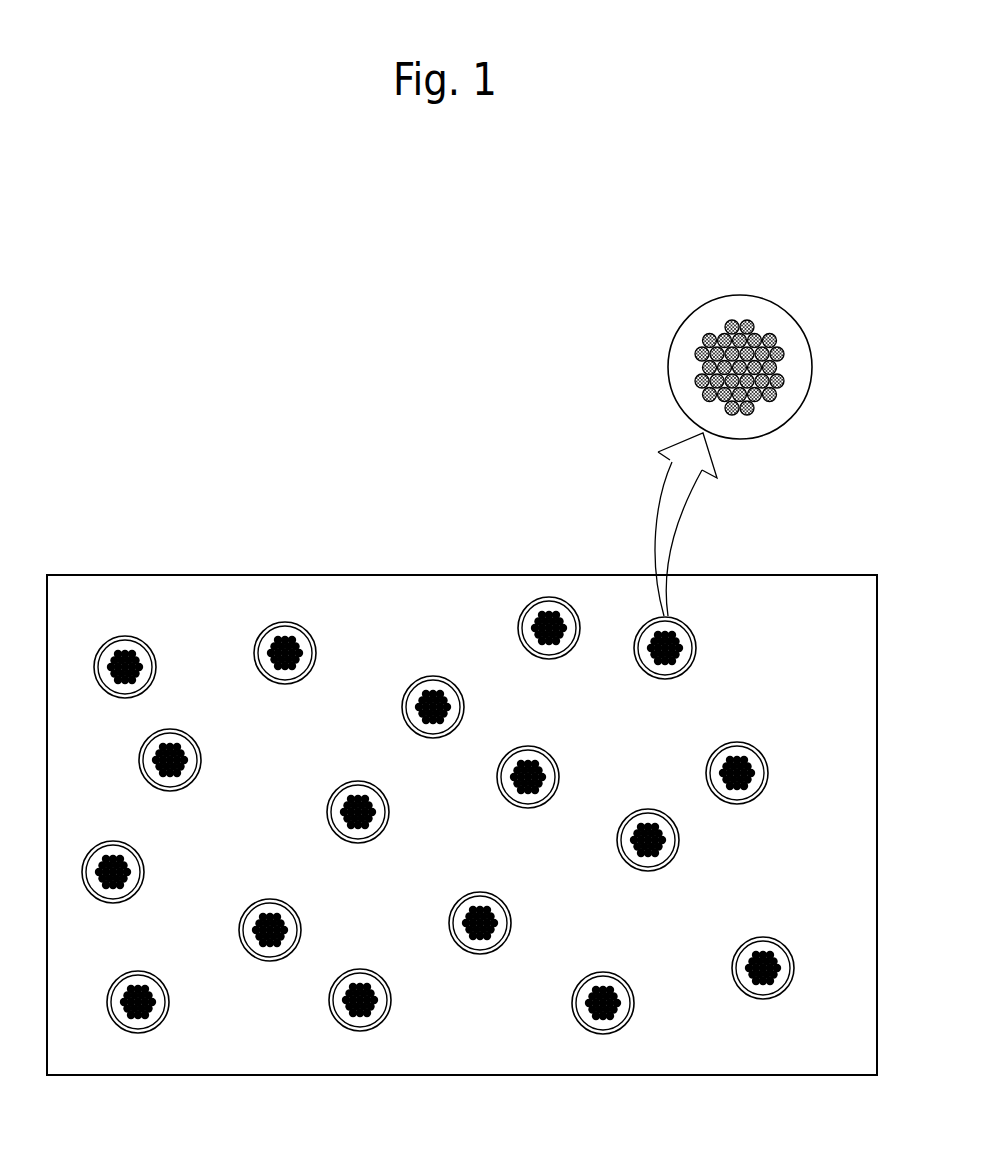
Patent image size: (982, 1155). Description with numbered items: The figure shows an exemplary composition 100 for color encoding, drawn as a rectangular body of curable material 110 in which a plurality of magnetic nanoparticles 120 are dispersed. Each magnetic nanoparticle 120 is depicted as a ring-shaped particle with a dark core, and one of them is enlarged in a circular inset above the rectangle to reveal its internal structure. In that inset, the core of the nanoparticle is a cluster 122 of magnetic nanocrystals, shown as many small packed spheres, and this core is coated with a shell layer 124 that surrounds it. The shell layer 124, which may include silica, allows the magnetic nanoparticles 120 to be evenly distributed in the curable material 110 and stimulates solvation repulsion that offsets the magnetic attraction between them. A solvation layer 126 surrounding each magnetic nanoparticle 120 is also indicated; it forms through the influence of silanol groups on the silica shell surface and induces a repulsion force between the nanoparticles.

The composition for color encoding 100 is at (303, 277).
The curable material 110 is at (810, 672).
The magnetic nanoparticles 120 is at (423, 650).
The cluster of magnetic nanocrystals 122 is at (707, 337).
The shell layer 124 is at (770, 312).
The solvation layer 126 is at (547, 598).